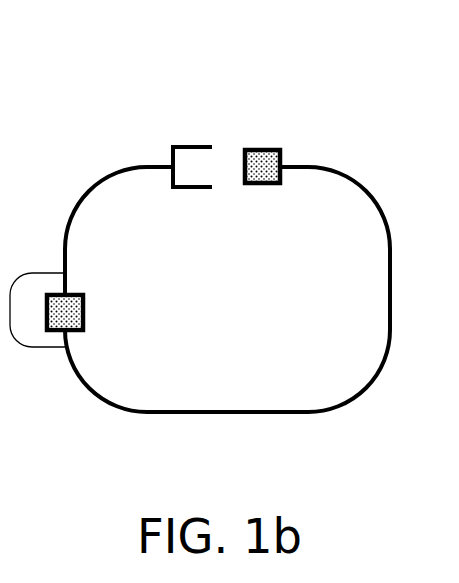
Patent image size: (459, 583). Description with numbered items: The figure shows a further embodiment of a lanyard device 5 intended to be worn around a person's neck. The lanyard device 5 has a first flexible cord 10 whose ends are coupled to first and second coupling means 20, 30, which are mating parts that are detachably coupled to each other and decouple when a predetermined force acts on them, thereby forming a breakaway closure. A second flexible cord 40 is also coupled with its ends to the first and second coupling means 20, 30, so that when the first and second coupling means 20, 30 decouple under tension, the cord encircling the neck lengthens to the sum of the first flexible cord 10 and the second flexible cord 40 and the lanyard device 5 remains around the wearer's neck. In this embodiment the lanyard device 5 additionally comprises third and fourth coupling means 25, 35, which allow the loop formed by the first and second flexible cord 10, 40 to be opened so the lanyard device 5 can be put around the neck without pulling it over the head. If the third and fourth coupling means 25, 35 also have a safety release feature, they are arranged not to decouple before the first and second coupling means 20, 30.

The lanyard device 5 is at (86, 91).
The first flexible cord 10 is at (228, 410).
The first coupling means 20 is at (85, 311).
The third coupling means 25 is at (192, 189).
The second coupling means 30 is at (85, 330).
The fourth coupling means 35 is at (262, 187).
The second flexible cord 40 is at (18, 275).